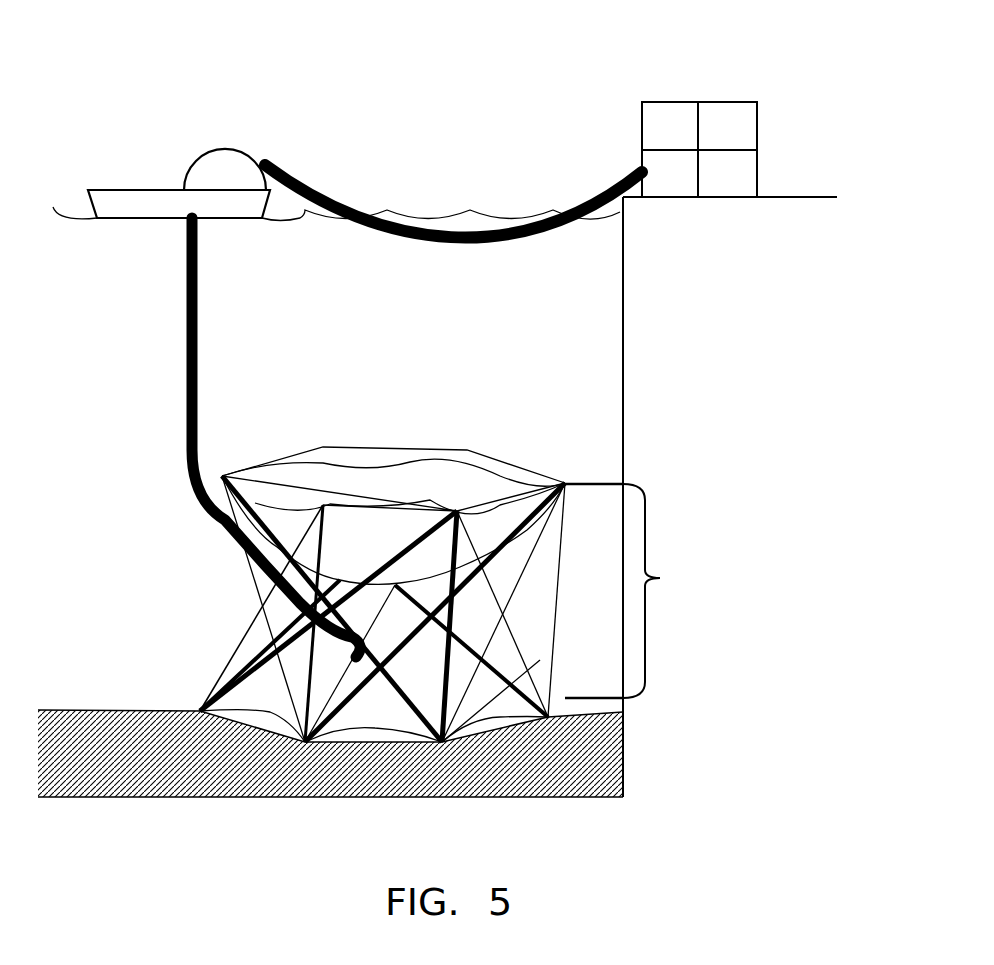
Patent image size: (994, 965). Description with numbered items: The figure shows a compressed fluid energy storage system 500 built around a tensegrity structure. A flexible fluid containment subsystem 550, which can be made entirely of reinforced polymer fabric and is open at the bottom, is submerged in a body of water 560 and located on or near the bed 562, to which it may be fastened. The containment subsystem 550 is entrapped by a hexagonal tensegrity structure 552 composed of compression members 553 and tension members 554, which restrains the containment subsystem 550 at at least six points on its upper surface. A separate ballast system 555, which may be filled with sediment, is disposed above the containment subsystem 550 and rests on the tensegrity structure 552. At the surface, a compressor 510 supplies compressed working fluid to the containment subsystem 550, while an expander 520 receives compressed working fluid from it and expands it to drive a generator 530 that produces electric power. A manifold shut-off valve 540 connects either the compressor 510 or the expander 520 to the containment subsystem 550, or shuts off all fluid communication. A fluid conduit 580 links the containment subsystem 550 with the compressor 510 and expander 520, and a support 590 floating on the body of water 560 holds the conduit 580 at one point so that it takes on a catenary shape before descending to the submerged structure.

The compressed fluid energy storage system 500 is at (476, 82).
The compressor 510 is at (681, 115).
The expander 520 is at (735, 178).
The generator 530 is at (730, 115).
The manifold shut-off valve 540 is at (667, 180).
The flexible fluid containment subsystem 550 is at (505, 693).
The tensegrity structure 552 is at (637, 591).
The compression members 553 is at (258, 658).
The tension members 554 is at (257, 610).
The ballast system 555 is at (447, 477).
The body of water 560 is at (582, 395).
The bed of body of water 562 is at (60, 720).
The fluid conduit 580 is at (315, 190).
The support 590 is at (167, 193).